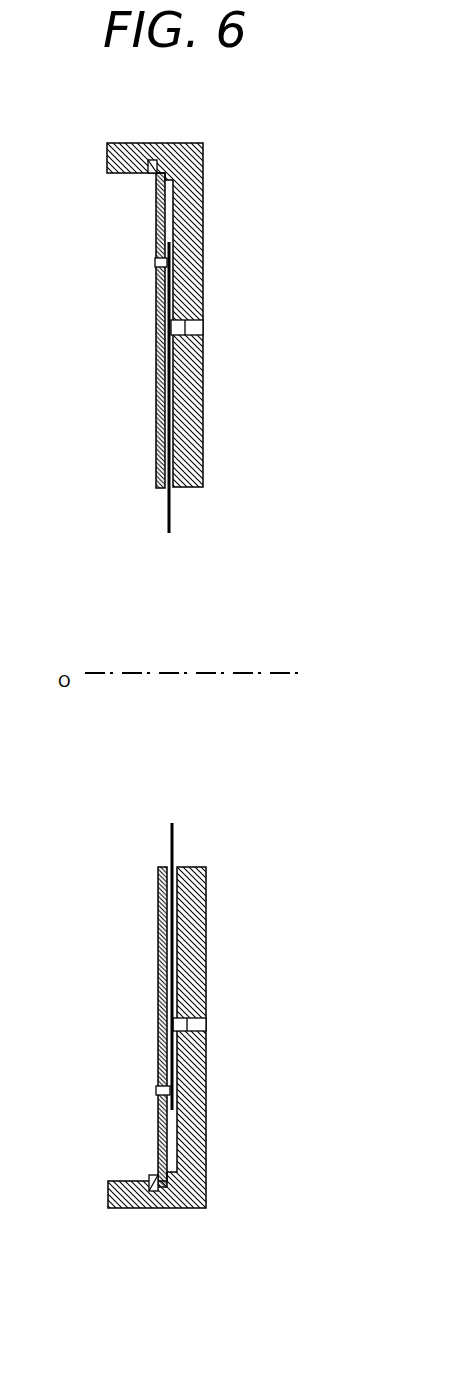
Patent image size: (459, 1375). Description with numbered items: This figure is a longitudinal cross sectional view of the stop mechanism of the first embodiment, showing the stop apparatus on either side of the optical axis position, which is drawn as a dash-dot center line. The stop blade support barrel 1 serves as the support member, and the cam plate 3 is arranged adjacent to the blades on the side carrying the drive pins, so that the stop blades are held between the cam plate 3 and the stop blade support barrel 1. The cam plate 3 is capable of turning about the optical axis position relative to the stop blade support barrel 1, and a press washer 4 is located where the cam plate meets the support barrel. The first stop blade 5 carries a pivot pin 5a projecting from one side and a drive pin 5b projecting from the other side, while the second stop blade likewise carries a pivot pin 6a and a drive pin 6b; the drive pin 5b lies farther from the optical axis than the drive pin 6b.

The stop blade support barrel 1 is at (189, 243).
The cam plate 3 is at (157, 385).
The press washer 4 is at (150, 172).
The first stop blade 5 is at (103, 387).
The pivot pin 5a is at (232, 352).
The pivot pin 6a is at (181, 333).
The drive pin 5b is at (96, 263).
The drive pin 6b is at (155, 263).